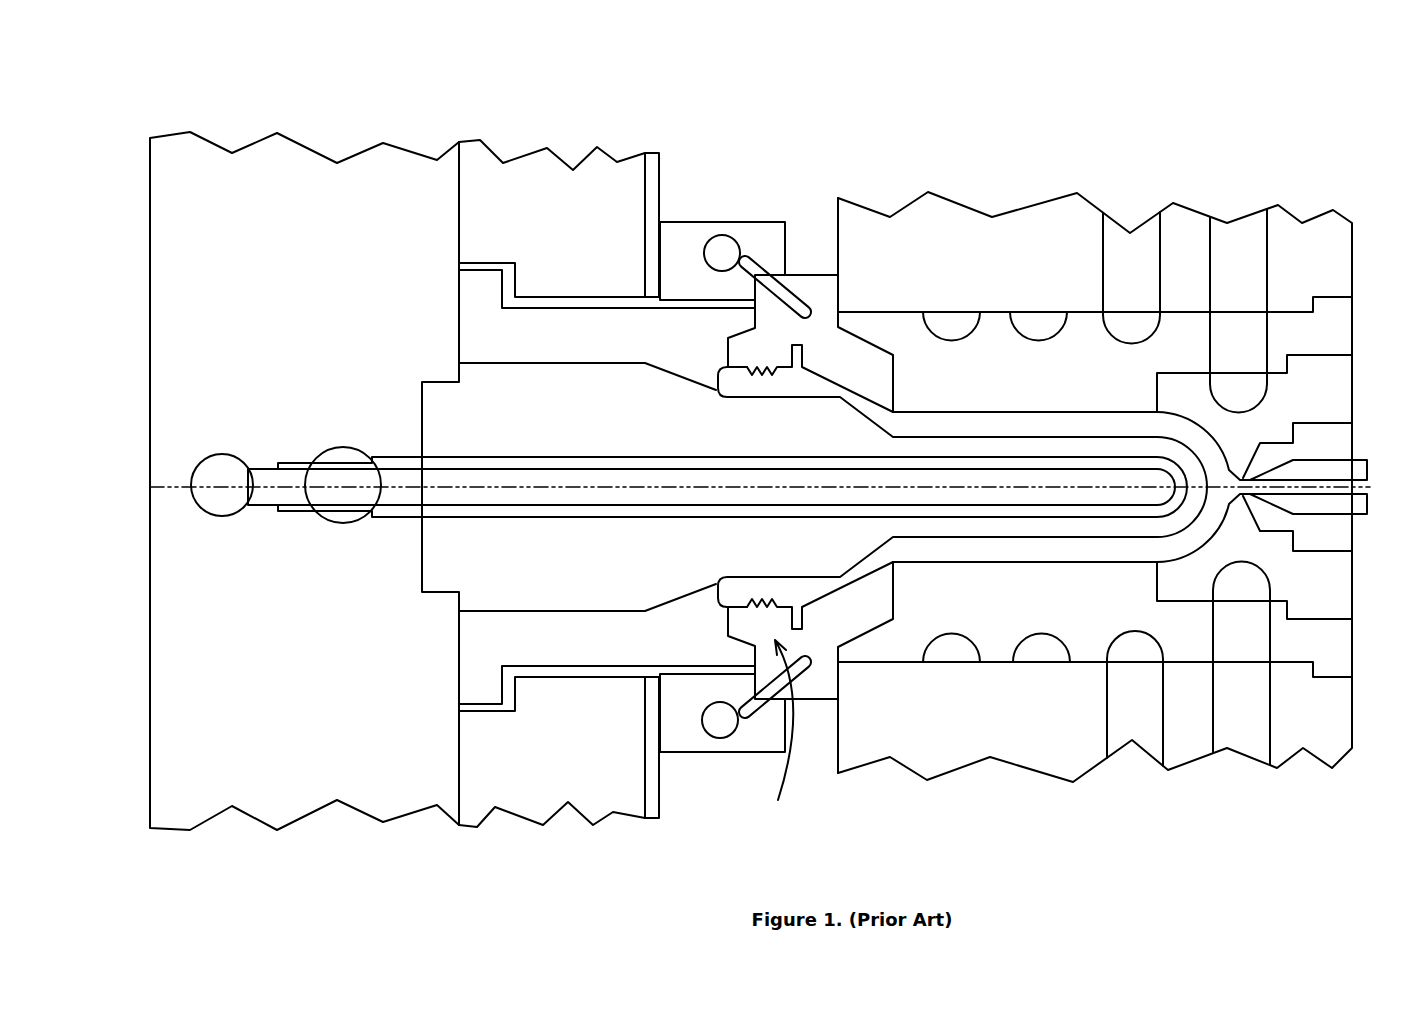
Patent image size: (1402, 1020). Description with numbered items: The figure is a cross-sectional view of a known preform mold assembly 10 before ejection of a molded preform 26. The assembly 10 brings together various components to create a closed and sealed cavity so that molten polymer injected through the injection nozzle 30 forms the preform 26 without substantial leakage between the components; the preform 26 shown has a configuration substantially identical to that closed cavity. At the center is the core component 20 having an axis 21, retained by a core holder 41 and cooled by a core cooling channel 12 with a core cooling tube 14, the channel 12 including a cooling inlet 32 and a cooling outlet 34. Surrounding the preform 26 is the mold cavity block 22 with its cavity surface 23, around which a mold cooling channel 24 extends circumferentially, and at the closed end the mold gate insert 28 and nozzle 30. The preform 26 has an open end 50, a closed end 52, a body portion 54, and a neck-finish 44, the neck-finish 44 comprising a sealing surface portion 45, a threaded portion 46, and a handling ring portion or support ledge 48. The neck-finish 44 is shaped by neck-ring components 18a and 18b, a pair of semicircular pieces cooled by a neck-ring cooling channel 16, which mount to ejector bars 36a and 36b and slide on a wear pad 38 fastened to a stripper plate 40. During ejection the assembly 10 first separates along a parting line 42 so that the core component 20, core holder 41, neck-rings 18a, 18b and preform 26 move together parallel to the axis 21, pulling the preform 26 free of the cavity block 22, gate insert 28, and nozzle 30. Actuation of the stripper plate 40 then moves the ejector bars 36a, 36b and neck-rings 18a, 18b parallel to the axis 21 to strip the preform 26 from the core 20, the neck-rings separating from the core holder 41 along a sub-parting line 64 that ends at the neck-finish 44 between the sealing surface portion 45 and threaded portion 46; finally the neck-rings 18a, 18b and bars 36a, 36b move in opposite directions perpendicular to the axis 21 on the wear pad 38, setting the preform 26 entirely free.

The preform mold assembly 10 is at (1036, 80).
The core cooling channel 12 is at (267, 480).
The core cooling tube 14 is at (403, 470).
The neck-ring cooling channel 16 is at (783, 296).
The neck-ring component 18a is at (823, 683).
The neck-ring component 18b is at (872, 343).
The core component 20 is at (460, 420).
The axis 21 is at (175, 487).
The mold cavity block 22 is at (1090, 347).
The cavity surface 23 is at (980, 413).
The mold cooling channel 24 is at (1137, 253).
The preform 26 is at (912, 425).
The mold gate insert 28 is at (1327, 383).
The injection nozzle 30 is at (1343, 472).
The cooling inlet 32 is at (213, 478).
The cooling outlet 34 is at (340, 455).
The ejector bar 36a is at (687, 740).
The ejector bar 36b is at (695, 233).
The wear pad 38 is at (655, 186).
The stripper plate 40 is at (533, 185).
The core holder 41 is at (480, 215).
The parting line 42 is at (903, 372).
The neck-finish 44 is at (771, 735).
The sealing surface portion 45 is at (712, 385).
The threaded portion 46 is at (762, 615).
The handling ring portion 48 is at (837, 643).
The open end 50 is at (713, 590).
The closed end 52 is at (1222, 535).
The body portion 54 is at (1030, 550).
The sub-parting line 64 is at (703, 362).